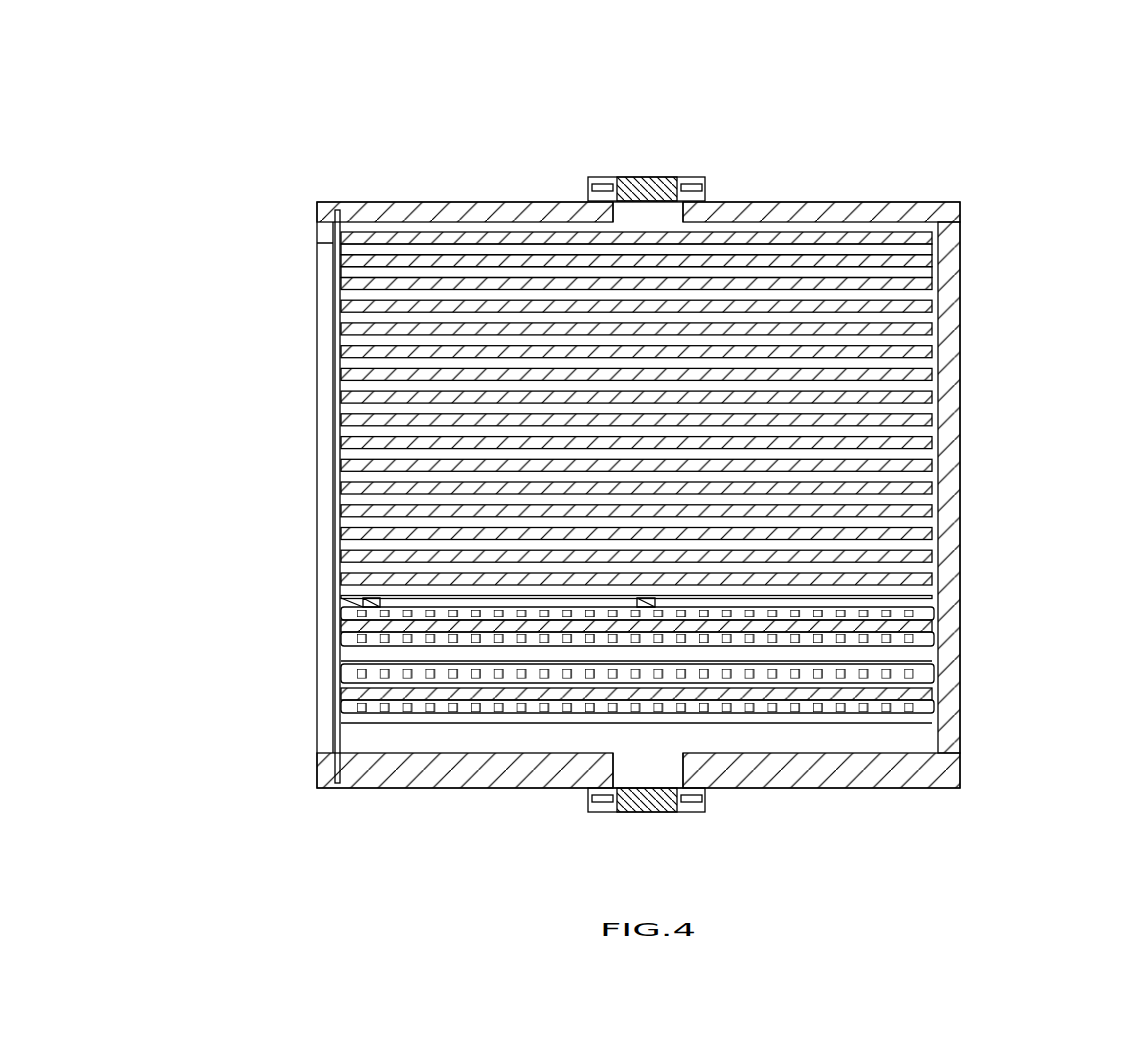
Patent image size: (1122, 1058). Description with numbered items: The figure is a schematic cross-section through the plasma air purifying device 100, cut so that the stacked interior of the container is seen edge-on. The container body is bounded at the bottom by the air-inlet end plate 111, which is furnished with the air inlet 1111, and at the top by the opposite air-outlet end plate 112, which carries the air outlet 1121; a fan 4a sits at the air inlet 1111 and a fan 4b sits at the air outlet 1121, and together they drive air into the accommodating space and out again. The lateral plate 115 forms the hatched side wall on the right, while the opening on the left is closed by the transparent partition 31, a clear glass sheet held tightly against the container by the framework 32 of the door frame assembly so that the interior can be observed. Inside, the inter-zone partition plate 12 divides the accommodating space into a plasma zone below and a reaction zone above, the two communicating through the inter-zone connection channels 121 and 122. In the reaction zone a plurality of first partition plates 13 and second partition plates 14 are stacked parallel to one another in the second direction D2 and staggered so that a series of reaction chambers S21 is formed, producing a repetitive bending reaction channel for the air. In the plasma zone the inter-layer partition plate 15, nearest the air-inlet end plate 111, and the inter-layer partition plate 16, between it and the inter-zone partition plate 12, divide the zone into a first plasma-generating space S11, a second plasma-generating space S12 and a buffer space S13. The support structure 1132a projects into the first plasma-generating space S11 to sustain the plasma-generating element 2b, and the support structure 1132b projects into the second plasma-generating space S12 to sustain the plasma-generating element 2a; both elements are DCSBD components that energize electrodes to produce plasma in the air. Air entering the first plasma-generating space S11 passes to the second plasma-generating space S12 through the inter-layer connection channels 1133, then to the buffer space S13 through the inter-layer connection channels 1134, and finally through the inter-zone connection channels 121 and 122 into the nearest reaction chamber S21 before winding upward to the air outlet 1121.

The plasma air purifying device 100 is at (268, 150).
The air-outlet end plate 112 is at (792, 212).
The air outlet 1121 is at (664, 208).
The fan 4b is at (627, 177).
The lateral plate 115 is at (962, 276).
The air-inlet end plate 111 is at (729, 781).
The air inlet 1111 is at (672, 795).
The fan 4a is at (627, 812).
The framework 32 is at (330, 217).
The transparent partition 31 is at (333, 268).
The first partition plate 13 is at (383, 242).
The second partition plate 14 is at (428, 260).
The inter-zone connection channel 122 is at (932, 584).
The reaction chamber S21 is at (868, 591).
The inter-zone partition plate 12 is at (932, 604).
The inter-zone connection channel 121 is at (418, 603).
The plasma-generating element 2b is at (550, 642).
The buffer space S13 is at (349, 613).
The inter-layer partition plate 16 is at (932, 628).
The inter-layer connection channel 1134 is at (372, 640).
The support structure 1132b is at (915, 655).
The plasma-generating element 2a is at (562, 622).
The second plasma-generating space S12 is at (349, 672).
The inter-layer partition plate 15 is at (932, 697).
The inter-layer connection channel 1133 is at (372, 706).
The support structure 1132a is at (915, 722).
The first plasma-generating space S11 is at (374, 740).
The second direction D2 is at (995, 348).